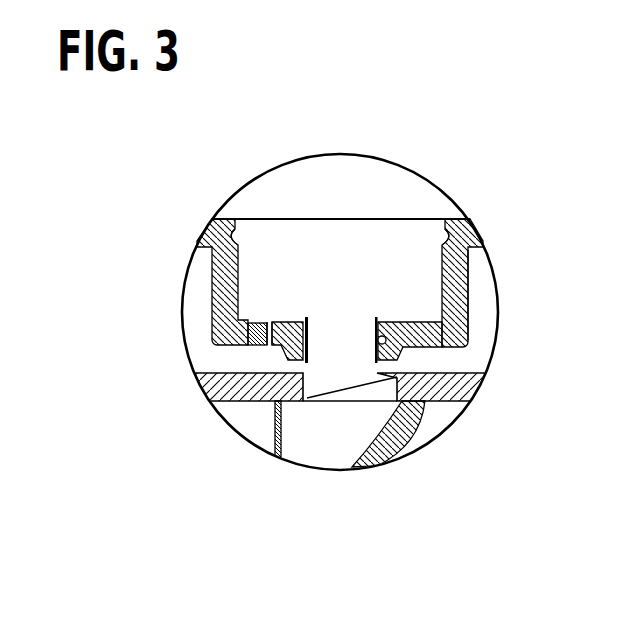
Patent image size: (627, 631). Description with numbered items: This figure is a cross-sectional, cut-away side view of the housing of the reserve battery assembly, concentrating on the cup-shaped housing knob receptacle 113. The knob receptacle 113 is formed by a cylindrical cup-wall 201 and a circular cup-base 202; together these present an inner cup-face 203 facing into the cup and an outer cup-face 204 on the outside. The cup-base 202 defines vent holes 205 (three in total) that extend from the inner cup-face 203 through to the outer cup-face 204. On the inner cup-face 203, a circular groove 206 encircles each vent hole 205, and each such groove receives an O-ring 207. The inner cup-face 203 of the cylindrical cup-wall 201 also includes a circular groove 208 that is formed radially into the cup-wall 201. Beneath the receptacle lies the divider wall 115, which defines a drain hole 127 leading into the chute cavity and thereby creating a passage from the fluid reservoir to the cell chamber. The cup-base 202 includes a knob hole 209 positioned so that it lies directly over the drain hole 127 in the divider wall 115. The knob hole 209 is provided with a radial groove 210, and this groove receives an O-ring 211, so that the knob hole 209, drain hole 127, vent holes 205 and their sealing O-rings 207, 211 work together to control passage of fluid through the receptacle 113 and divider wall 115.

The cylindrical cup-wall 201 is at (462, 297).
The inner cup-face 203 is at (240, 258).
The housing knob receptacle 113 is at (466, 267).
The outer cup-face 204 is at (468, 318).
The circular groove 208 is at (232, 237).
The O-ring 207 is at (257, 323).
The circular cup-base 202 is at (405, 362).
The vent hole 205 is at (265, 352).
The circular groove 206 is at (249, 333).
The radial groove 210 is at (302, 323).
The O-ring 211 is at (308, 335).
The divider wall 115 is at (450, 383).
The knob hole 209 is at (373, 352).
The drain hole 127 is at (372, 395).